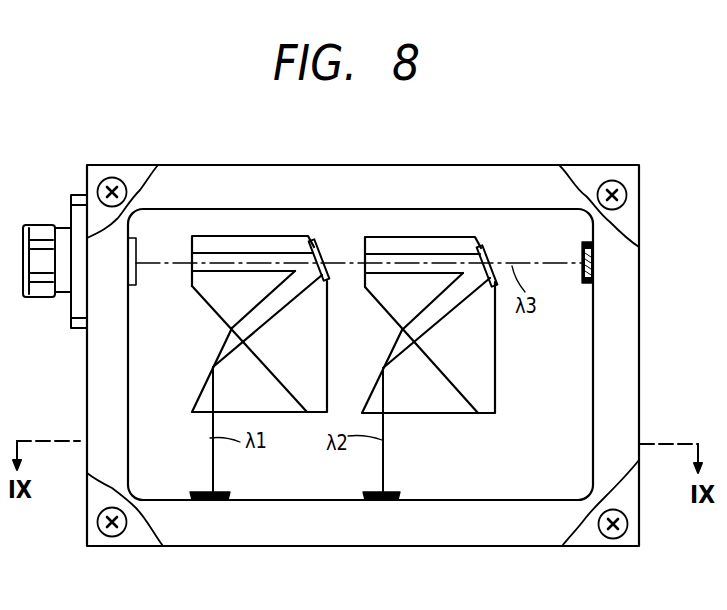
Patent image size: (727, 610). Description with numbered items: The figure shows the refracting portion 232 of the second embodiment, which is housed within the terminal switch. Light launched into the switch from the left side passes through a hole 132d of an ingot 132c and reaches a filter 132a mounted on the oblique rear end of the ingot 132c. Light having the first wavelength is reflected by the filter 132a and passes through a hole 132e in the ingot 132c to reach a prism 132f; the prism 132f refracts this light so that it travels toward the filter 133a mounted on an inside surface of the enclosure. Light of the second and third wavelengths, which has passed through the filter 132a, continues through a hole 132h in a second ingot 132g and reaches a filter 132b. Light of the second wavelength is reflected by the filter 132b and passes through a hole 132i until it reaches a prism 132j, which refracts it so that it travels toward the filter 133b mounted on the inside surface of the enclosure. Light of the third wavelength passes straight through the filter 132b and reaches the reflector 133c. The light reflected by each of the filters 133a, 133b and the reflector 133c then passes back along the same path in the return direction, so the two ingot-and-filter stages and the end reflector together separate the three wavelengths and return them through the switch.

The refracting portion 232 is at (616, 166).
The filter 132a is at (319, 248).
The filter 132b is at (487, 248).
The ingot 132c is at (212, 245).
The hole 132d is at (270, 248).
The hole 132e is at (282, 305).
The prism 132f is at (205, 396).
The ingot 132g is at (405, 245).
The hole 132h is at (450, 245).
The hole 132i is at (458, 298).
The prism 132j is at (428, 392).
The filter 133a is at (229, 493).
The filter 133b is at (395, 492).
The reflector 133c is at (584, 283).